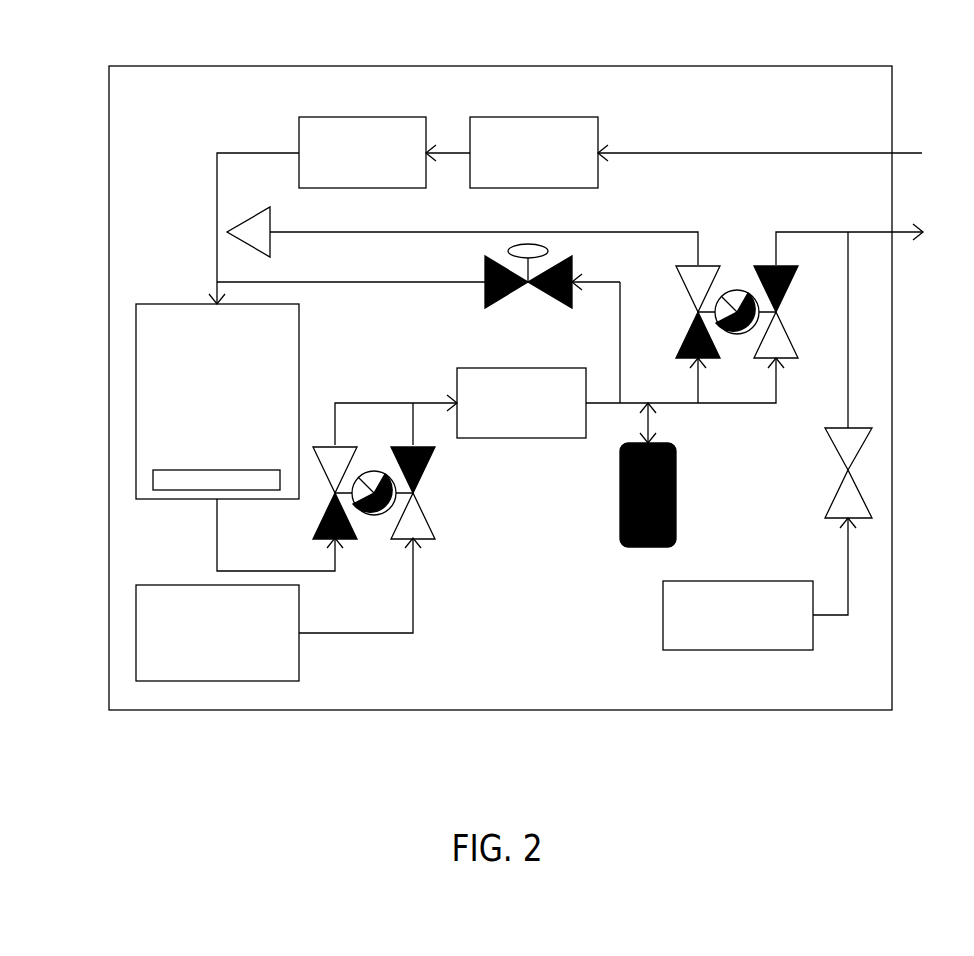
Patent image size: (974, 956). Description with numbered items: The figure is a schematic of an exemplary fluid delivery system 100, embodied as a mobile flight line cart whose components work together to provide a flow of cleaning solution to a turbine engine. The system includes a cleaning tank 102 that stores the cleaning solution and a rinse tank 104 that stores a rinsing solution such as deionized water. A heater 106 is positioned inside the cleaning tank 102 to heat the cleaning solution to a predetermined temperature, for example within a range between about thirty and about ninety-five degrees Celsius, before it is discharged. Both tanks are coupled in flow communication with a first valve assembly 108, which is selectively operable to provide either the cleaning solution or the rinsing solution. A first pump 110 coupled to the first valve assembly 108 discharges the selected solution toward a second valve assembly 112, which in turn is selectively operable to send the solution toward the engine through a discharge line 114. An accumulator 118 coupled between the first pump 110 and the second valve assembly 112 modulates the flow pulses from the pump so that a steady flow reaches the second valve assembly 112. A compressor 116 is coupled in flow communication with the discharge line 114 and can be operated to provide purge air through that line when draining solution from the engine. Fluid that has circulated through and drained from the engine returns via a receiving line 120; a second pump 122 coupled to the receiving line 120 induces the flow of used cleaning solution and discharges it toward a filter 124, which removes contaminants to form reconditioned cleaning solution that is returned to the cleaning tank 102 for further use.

The fluid delivery system 100 is at (759, 66).
The cleaning tank 102 is at (136, 383).
The rinse tank 104 is at (136, 639).
The heater 106 is at (153, 483).
The first valve assembly 108 is at (456, 553).
The first pump 110 is at (518, 438).
The second valve assembly 112 is at (744, 234).
The discharge line 114 is at (877, 232).
The compressor 116 is at (735, 650).
The accumulator 118 is at (676, 492).
The receiving line 120 is at (877, 153).
The second pump 122 is at (558, 117).
The filter 124 is at (388, 117).